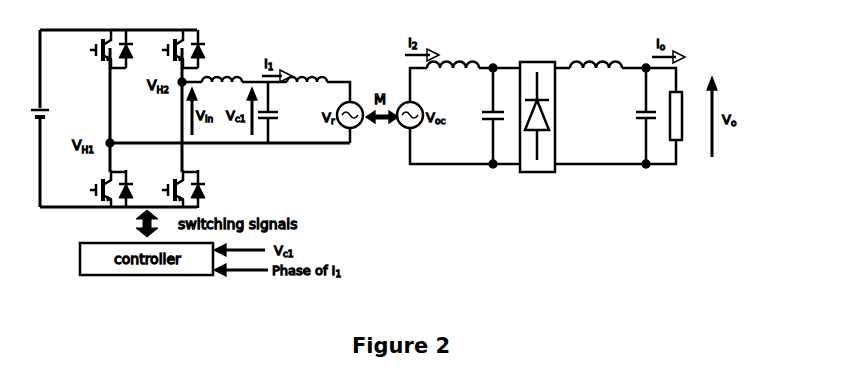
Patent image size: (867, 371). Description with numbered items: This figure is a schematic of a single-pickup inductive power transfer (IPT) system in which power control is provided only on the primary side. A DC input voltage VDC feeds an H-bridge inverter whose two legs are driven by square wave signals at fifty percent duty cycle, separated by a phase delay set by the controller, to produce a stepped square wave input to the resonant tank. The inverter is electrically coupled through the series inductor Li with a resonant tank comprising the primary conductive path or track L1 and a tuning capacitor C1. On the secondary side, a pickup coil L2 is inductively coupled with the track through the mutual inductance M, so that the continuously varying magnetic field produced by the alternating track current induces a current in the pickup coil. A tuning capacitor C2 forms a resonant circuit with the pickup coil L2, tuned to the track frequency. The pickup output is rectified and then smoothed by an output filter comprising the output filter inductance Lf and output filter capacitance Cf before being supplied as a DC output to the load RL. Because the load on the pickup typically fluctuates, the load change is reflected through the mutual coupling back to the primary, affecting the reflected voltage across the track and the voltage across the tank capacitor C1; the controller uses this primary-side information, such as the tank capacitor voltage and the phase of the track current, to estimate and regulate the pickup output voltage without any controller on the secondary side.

The input voltage VDC is at (55, 119).
The series inductor Li is at (212, 71).
The primary conductive path or track L1 is at (307, 71).
The tuning capacitor C1 is at (280, 112).
The pickup coil L2 is at (453, 79).
The tuning capacitor C2 is at (483, 116).
The output filter inductance Lf is at (596, 78).
The output filter capacitance Cf is at (635, 116).
The load RL is at (686, 116).